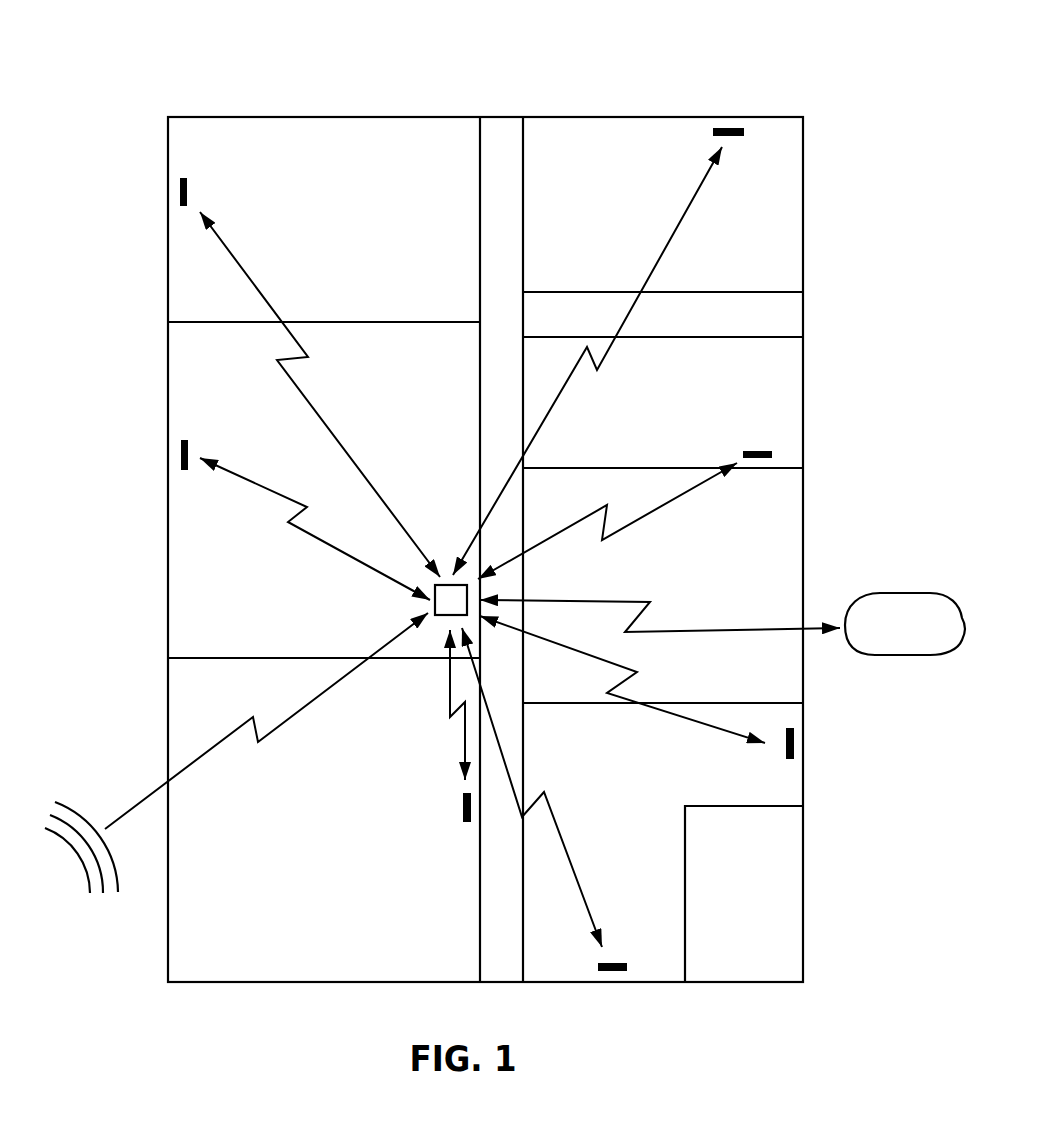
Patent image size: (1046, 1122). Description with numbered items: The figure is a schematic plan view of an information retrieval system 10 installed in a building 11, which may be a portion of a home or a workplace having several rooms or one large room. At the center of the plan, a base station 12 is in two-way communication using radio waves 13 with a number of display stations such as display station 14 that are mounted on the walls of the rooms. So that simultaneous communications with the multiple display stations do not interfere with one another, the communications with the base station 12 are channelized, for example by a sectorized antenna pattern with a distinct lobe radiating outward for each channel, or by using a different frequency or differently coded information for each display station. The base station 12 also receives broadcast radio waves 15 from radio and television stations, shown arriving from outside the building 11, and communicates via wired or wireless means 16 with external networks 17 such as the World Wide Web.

The information retrieval system 10 is at (265, 97).
The building 11 is at (663, 985).
The base station 12 is at (440, 617).
The radio waves 13 is at (317, 402).
The display station 14 is at (180, 192).
The broadcast radio waves 15 is at (236, 753).
The wired or wireless means 16 is at (660, 616).
The external networks 17 is at (885, 592).